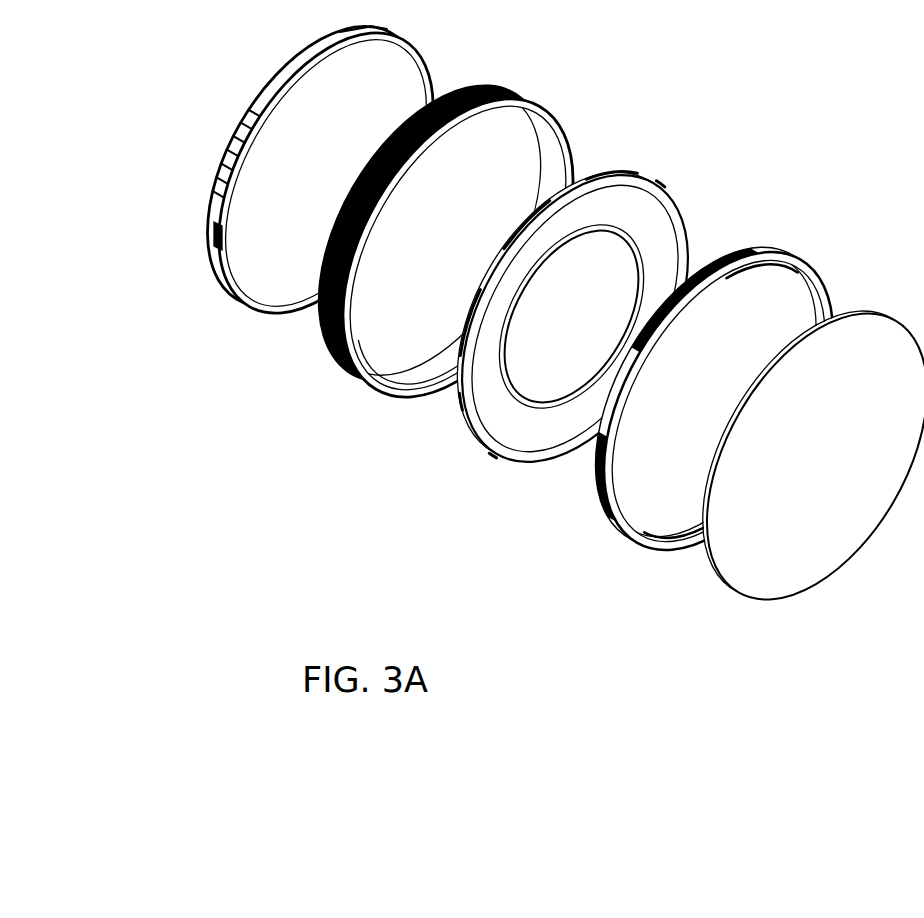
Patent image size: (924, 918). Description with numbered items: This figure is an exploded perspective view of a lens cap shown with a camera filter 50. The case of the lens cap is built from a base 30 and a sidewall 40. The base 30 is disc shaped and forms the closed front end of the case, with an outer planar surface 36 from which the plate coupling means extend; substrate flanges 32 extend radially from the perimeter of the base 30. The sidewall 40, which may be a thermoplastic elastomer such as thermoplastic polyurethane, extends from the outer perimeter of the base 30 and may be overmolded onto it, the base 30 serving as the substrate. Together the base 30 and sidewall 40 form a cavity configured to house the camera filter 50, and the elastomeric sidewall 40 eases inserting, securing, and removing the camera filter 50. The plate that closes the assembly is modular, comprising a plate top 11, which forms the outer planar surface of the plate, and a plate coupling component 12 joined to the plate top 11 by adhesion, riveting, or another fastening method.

The plate top 11 is at (727, 588).
The plate coupling component 12 is at (600, 515).
The base 30 is at (533, 305).
The substrate flanges 32 is at (605, 163).
The outer planar surface 36 is at (637, 237).
The sidewall 40 is at (320, 337).
The camera filter 50 is at (210, 234).